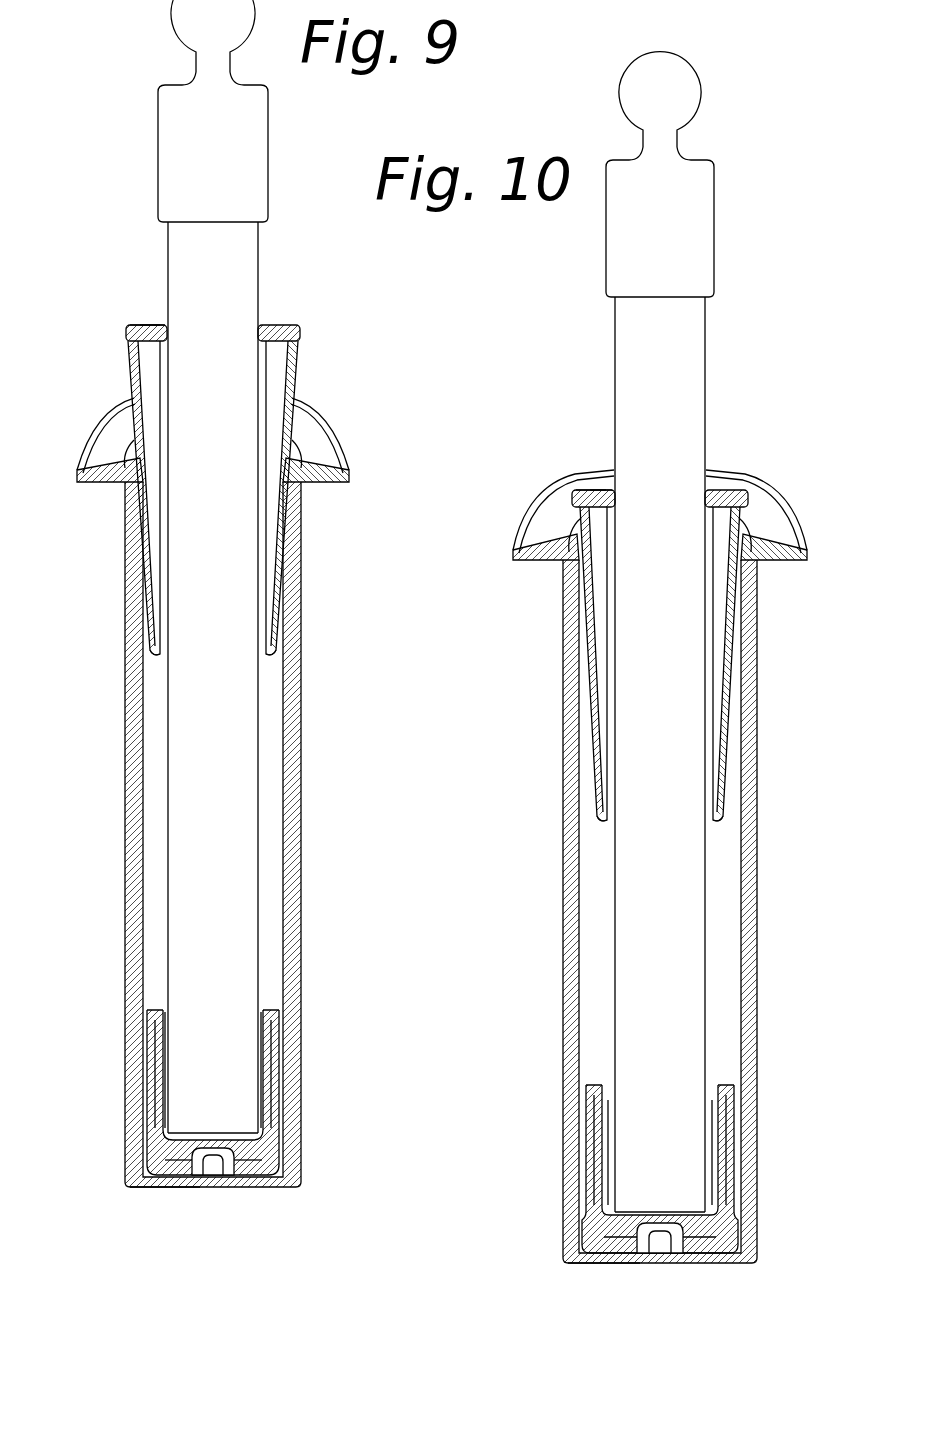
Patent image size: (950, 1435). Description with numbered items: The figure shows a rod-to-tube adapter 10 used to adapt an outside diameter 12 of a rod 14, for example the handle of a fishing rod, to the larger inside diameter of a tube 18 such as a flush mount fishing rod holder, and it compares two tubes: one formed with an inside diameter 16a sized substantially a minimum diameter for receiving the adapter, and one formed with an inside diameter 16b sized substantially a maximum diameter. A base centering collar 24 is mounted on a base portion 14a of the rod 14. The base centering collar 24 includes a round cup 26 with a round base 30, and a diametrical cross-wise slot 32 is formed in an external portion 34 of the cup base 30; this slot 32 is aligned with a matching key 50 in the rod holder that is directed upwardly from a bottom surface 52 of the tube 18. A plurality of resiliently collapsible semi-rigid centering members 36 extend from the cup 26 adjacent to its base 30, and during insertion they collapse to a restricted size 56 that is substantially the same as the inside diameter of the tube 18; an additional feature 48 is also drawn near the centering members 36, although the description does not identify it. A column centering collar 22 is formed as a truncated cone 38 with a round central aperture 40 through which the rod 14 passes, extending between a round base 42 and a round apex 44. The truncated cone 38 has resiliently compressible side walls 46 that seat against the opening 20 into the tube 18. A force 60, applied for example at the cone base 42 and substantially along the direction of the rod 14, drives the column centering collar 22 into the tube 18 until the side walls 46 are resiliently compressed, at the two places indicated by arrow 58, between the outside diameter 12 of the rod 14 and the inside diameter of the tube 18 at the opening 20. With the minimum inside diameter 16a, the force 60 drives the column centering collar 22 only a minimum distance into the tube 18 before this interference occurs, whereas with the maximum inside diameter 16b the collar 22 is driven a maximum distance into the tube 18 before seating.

In FIG. 9, the rod-to-tube adapter 10 is at (352, 323).
In FIG. 10, the rod-to-tube adapter 10 is at (499, 408).
In FIG. 9, the outside diameter 12 is at (170, 862).
In FIG. 10, the outside diameter 12 is at (617, 838).
In FIG. 9, the rod 14 is at (194, 742).
In FIG. 10, the rod 14 is at (642, 922).
In FIG. 9, the base portion 14a is at (184, 1122).
In FIG. 10, the base portion 14a is at (634, 1202).
In FIG. 9, the inside diameter 16a is at (142, 862).
In FIG. 10, the inside diameter 16b is at (578, 838).
In FIG. 9, the tube 18 is at (302, 805).
In FIG. 10, the tube 18 is at (759, 801).
In FIG. 9, the opening 20 is at (294, 452).
In FIG. 10, the opening 20 is at (756, 535).
In FIG. 9, the column centering collar 22 is at (128, 327).
In FIG. 10, the column centering collar 22 is at (573, 491).
In FIG. 9, the base centering collar 24 is at (160, 1146).
In FIG. 10, the base centering collar 24 is at (598, 1234).
In FIG. 9, the round cup 26 is at (160, 1101).
In FIG. 10, the round cup 26 is at (600, 1177).
In FIG. 9, the round base 30 is at (272, 1163).
In FIG. 10, the round base 30 is at (728, 1237).
In FIG. 9, the diametrical cross-wise slot 32 is at (134, 1189).
In FIG. 10, the diametrical cross-wise slot 32 is at (585, 1265).
In FIG. 9, the external portion 34 is at (180, 1178).
In FIG. 10, the external portion 34 is at (632, 1256).
In FIG. 9, the resiliently collapsible semi-rigid centering members 36 is at (150, 1064).
In FIG. 10, the resiliently collapsible semi-rigid centering members 36 is at (594, 1137).
In FIG. 9, the truncated cone 38 is at (86, 326).
In FIG. 10, the truncated cone 38 is at (522, 496).
In FIG. 9, the round central aperture 40 is at (264, 324).
In FIG. 10, the round central aperture 40 is at (716, 489).
In FIG. 9, the round base 42 is at (138, 324).
In FIG. 10, the round base 42 is at (584, 489).
In FIG. 9, the round apex 44 is at (158, 660).
In FIG. 10, the round apex 44 is at (605, 826).
In FIG. 9, the resiliently compressible side walls 46 is at (131, 384).
In FIG. 10, the resiliently compressible side walls 46 is at (590, 694).
In FIG. 9, the rib 48 is at (166, 1008).
In FIG. 10, the rib 48 is at (612, 1086).
In FIG. 9, the matching key 50 is at (268, 1172).
In FIG. 10, the matching key 50 is at (722, 1251).
In FIG. 9, the bottom surface 52 is at (220, 1177).
In FIG. 10, the bottom surface 52 is at (668, 1256).
In FIG. 9, the restricted size 56 is at (146, 1012).
In FIG. 10, the restricted size 56 is at (585, 1090).
In FIG. 9, the arrow 58 is at (133, 473).
In FIG. 10, the arrow 58 is at (566, 556).
In FIG. 9, the force 60 is at (150, 316).
In FIG. 10, the force 60 is at (597, 478).